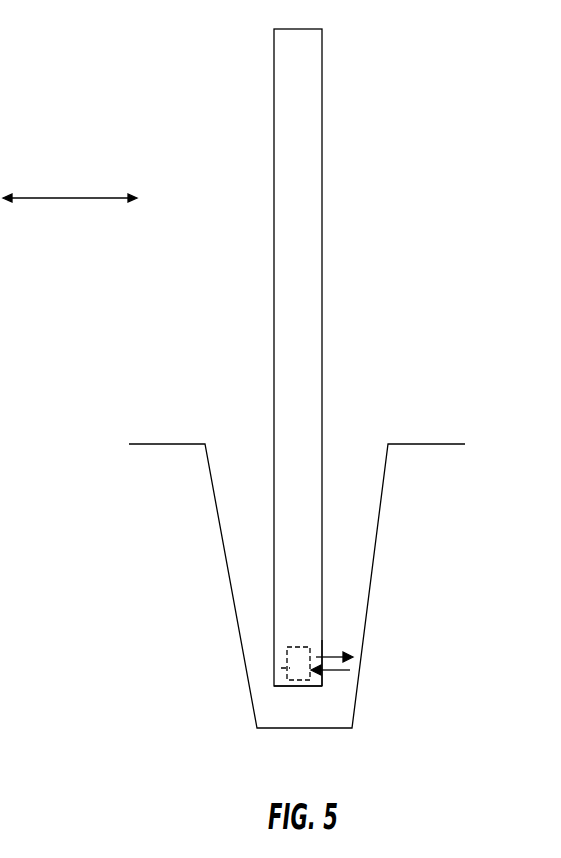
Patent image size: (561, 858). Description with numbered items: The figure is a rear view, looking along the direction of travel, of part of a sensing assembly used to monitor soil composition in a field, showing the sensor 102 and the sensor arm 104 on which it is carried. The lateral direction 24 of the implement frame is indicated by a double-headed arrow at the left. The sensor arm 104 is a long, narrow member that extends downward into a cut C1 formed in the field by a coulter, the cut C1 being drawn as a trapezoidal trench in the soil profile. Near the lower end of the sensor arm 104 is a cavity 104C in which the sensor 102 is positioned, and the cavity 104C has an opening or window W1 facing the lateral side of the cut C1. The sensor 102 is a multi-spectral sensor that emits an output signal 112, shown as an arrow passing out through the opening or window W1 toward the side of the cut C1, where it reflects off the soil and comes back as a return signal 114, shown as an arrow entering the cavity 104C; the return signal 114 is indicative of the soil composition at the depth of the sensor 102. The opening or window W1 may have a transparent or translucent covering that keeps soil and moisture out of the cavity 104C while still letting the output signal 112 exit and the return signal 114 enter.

The lateral direction 24 is at (60, 198).
The sensor arm 104 is at (322, 362).
The cut C1 is at (378, 504).
The cavity 104C is at (288, 609).
The opening/window W1 is at (322, 642).
The sensor 102 is at (280, 668).
The output signal 112 is at (345, 652).
The return signal 114 is at (334, 674).